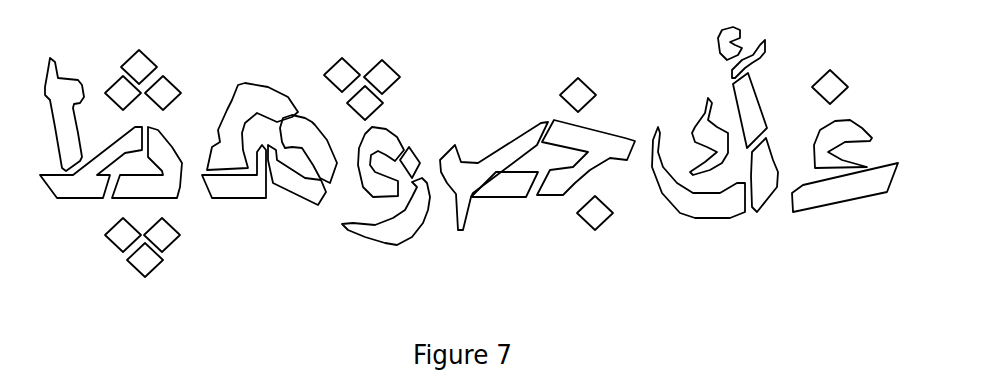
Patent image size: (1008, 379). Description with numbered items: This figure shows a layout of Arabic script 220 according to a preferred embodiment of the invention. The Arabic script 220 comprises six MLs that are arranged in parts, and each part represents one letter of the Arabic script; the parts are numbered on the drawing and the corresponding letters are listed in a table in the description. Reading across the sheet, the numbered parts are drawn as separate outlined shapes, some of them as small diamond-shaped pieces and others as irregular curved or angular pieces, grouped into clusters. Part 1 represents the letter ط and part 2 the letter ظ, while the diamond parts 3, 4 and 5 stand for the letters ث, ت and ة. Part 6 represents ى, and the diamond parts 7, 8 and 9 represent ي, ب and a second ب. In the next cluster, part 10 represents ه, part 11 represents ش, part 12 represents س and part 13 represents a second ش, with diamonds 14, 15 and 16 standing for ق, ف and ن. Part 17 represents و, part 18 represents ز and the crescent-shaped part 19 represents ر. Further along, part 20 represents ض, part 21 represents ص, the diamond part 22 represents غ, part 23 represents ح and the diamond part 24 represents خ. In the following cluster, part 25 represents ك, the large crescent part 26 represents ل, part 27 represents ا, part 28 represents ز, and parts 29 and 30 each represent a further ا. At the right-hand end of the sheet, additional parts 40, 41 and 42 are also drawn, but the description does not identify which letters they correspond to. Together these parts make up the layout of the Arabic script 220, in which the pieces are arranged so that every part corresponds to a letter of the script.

The Arabic script 220 is at (236, 271).
The part for letter ط 1 is at (64, 114).
The part for letter ظ 2 is at (91, 162).
The part for letter ث 3 is at (139, 67).
The part for letter ت 4 is at (123, 93).
The part for letter ة 5 is at (163, 93).
The part for letter ى 6 is at (147, 162).
The part for letter ي 7 is at (123, 235).
The part for letter ب 8 is at (162, 235).
The part for letter ب 9 is at (145, 260).
The part for letter ه 10 is at (252, 126).
The part for letter ش 11 is at (234, 171).
The part for letter س 12 is at (308, 149).
The part for letter ش 13 is at (297, 175).
The part for letter ق 14 is at (342, 75).
The part for letter ف 15 is at (382, 77).
The part for letter ن 16 is at (365, 103).
The part for letter و 17 is at (381, 162).
The part for letter ز 18 is at (410, 162).
The part for letter ر 19 is at (386, 211).
The part for letter ض 20 is at (494, 176).
The part for letter ص 21 is at (504, 184).
The part for letter غ 22 is at (578, 95).
The part for letter ح 23 is at (586, 157).
The part for letter خ 24 is at (595, 213).
The part for letter ك 25 is at (709, 136).
The part for letter ل 26 is at (698, 172).
The part for letter ا 27 is at (721, 42).
The part for letter ز 28 is at (760, 59).
The part for letter ا 29 is at (750, 110).
The part for letter ا 30 is at (765, 175).
The puzzle piece 40 is at (830, 87).
The puzzle piece 41 is at (843, 144).
The puzzle piece 42 is at (845, 187).